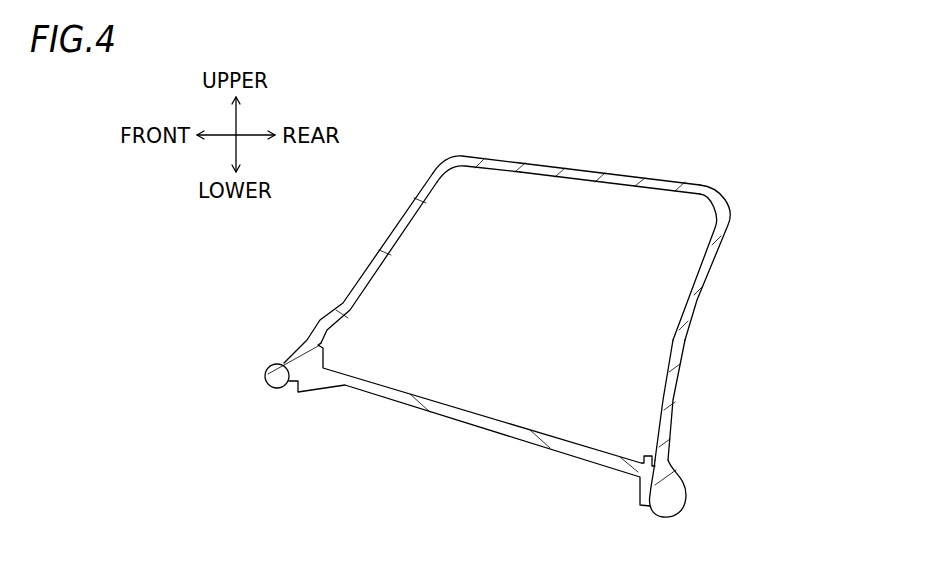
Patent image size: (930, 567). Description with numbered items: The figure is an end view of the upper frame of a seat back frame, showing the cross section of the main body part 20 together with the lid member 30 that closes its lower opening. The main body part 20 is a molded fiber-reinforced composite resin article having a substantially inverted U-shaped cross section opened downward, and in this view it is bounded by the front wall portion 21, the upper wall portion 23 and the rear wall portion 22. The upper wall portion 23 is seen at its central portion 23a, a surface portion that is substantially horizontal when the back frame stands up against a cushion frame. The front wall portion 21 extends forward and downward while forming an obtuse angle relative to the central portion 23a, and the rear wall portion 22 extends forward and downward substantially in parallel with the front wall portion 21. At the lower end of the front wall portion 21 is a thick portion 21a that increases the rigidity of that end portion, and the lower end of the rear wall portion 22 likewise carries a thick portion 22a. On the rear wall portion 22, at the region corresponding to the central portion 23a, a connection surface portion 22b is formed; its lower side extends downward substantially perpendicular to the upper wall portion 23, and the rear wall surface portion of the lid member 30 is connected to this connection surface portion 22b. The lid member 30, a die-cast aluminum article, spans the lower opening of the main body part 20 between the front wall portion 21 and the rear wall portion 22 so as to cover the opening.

The main body part 20 is at (650, 172).
The front wall portion 21 is at (387, 241).
The thick portion 21a is at (280, 389).
The rear wall portion 22 is at (705, 288).
The thick portion 22a is at (668, 497).
The connection surface portion 22b is at (672, 412).
The upper wall portion 23 is at (562, 168).
The central portion 23a is at (488, 156).
The lid member 30 is at (497, 433).